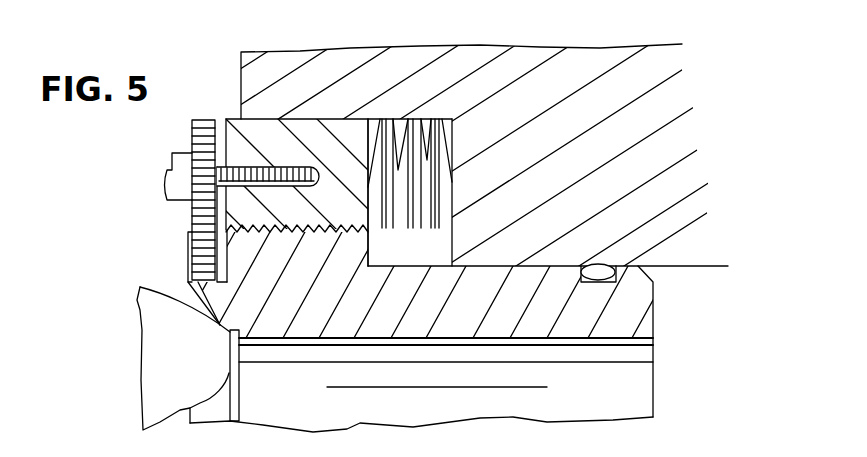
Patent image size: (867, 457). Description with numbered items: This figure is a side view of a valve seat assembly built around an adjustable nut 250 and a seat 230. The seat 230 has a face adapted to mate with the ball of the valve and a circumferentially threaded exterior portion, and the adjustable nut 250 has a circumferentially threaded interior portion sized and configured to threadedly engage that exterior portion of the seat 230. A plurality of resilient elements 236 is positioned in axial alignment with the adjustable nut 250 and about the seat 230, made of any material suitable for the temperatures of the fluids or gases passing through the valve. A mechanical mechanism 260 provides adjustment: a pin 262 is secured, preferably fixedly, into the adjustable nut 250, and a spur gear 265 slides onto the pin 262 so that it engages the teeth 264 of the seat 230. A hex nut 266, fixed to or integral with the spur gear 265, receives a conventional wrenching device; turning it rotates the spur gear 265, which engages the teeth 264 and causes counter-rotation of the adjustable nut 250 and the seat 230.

The seat 230 is at (300, 325).
The resilient elements 236 is at (404, 125).
The adjustable nut 250 is at (333, 130).
The mechanical mechanism 260 is at (200, 177).
The pin 262 is at (258, 170).
The teeth 264 is at (194, 264).
The spur gear 265 is at (193, 211).
The hex nut 266 is at (176, 190).